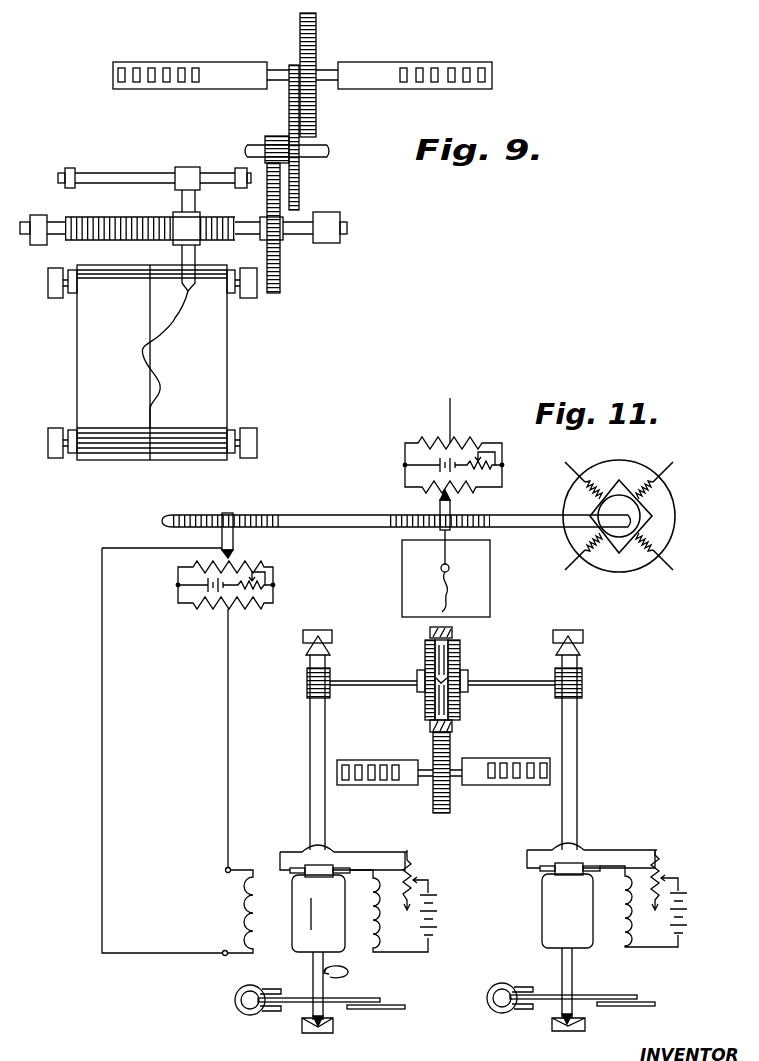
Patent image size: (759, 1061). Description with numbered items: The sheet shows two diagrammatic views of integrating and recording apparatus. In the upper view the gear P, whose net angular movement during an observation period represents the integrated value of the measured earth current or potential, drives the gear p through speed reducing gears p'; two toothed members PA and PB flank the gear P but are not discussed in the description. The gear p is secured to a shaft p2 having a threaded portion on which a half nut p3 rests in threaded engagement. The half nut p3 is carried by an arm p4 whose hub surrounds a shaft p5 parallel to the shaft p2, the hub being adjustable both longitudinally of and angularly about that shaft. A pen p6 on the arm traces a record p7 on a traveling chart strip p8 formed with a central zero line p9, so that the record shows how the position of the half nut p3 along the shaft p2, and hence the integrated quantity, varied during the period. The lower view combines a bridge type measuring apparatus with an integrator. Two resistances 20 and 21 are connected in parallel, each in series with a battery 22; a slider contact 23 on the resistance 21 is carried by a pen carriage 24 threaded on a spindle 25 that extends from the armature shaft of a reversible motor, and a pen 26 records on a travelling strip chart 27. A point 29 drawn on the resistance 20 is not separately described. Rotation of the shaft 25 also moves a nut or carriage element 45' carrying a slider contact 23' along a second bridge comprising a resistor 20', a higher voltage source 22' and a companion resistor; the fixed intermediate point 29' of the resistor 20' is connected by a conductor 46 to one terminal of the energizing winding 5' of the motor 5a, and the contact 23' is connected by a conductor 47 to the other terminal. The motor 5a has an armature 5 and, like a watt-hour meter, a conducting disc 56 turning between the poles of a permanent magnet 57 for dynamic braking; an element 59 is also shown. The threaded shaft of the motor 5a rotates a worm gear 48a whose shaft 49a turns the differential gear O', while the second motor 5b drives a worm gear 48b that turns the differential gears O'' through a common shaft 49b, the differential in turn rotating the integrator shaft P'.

In FIG. 9, the gear P is at (323, 75).
In FIG. 11, the gear P is at (459, 775).
In FIG. 9, the rack PA is at (403, 62).
In FIG. 11, the rack PA is at (525, 785).
In FIG. 9, the rack PB is at (200, 62).
In FIG. 11, the rack PB is at (390, 785).
In FIG. 9, the speed reducing gears p' is at (276, 137).
In FIG. 11, the integrator shaft P' is at (432, 749).
In FIG. 9, the gear p is at (290, 228).
In FIG. 9, the threaded shaft p2 is at (53, 228).
In FIG. 9, the half nut p3 is at (185, 235).
In FIG. 9, the arm p4 is at (175, 190).
In FIG. 9, the shaft p5 is at (97, 173).
In FIG. 9, the pen p6 is at (193, 290).
In FIG. 9, the record p7 is at (172, 318).
In FIG. 9, the traveling record chart strip p8 is at (222, 360).
In FIG. 9, the central zero line p9 is at (150, 422).
In FIG. 11, the resistance 20 is at (453, 437).
In FIG. 11, the resistance 21 is at (422, 487).
In FIG. 11, the battery 22 is at (435, 458).
In FIG. 11, the slider contact 23 is at (425, 501).
In FIG. 11, the pen carriage 24 is at (452, 506).
In FIG. 11, the threaded spindle 25 is at (524, 515).
In FIG. 11, the pen 26 is at (449, 560).
In FIG. 11, the travelling strip chart 27 is at (483, 592).
In FIG. 11, the tap 29 is at (474, 420).
In FIG. 11, the resistor 20' is at (201, 607).
In FIG. 11, the energizing current source 22' is at (201, 586).
In FIG. 11, the slider contact 23' is at (201, 568).
In FIG. 11, the fixed intermediate point 29' is at (195, 627).
In FIG. 11, the nut or carriage element 45' is at (182, 535).
In FIG. 11, the conductor 46 is at (228, 660).
In FIG. 11, the conductor 47 is at (102, 718).
In FIG. 11, the worm gear 48a is at (310, 704).
In FIG. 11, the worm gear 48b is at (580, 708).
In FIG. 11, the shaft 49a is at (357, 680).
In FIG. 11, the common shaft 49b is at (515, 685).
In FIG. 11, the differential gear O' is at (422, 679).
In FIG. 11, the differential gears O'' is at (477, 674).
In FIG. 11, the armature 5 is at (574, 937).
In FIG. 11, the winding 5' is at (218, 911).
In FIG. 11, the motor 5a is at (280, 902).
In FIG. 11, the motor 5b is at (610, 928).
In FIG. 11, the conducting disc 56 is at (347, 998).
In FIG. 11, the permanent magnet 57 is at (240, 1012).
In FIG. 11, the integrator element 59 is at (370, 1010).